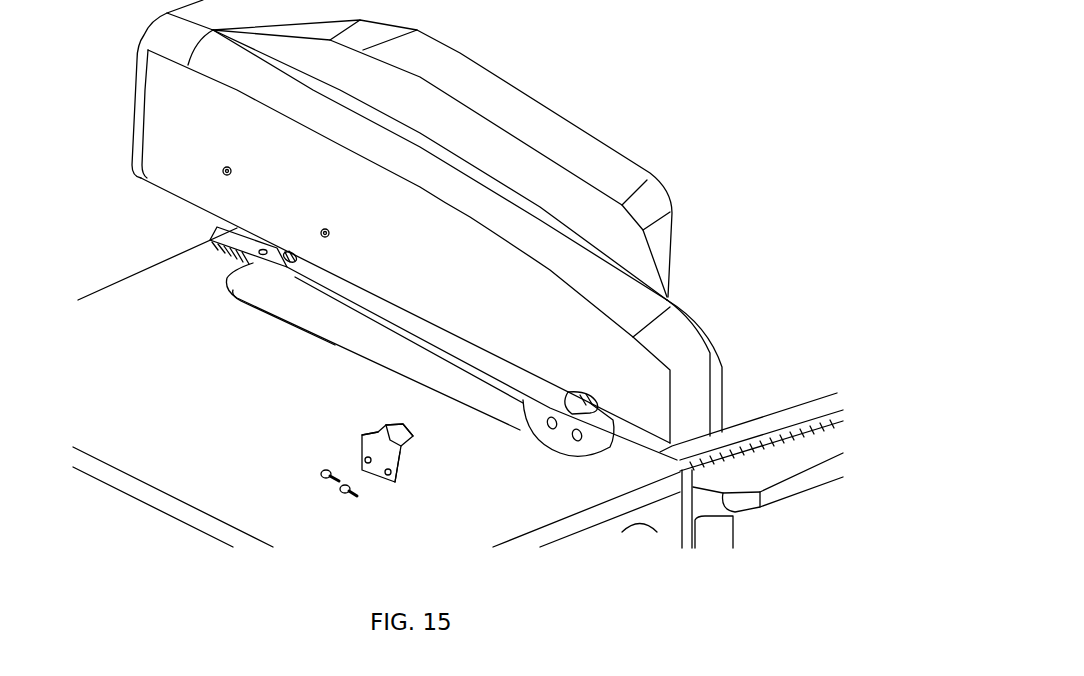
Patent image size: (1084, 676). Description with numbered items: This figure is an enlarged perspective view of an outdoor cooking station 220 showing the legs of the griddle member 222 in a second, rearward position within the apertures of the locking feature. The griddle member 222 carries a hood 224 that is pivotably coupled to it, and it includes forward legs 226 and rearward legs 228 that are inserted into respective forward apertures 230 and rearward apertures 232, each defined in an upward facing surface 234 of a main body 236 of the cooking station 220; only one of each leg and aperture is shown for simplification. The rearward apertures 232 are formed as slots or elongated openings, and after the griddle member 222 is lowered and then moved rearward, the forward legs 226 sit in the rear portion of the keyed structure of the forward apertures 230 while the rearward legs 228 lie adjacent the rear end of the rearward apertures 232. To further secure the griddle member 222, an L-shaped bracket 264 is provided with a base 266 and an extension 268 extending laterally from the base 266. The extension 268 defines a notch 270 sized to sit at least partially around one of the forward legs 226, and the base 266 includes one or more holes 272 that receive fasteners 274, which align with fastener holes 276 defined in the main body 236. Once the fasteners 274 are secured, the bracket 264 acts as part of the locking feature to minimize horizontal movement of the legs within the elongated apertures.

The outdoor cooking station 220 is at (823, 273).
The griddle member 222 is at (150, 191).
The hood 224 is at (153, 96).
The forward legs 226 is at (580, 388).
The rearward legs 228 is at (284, 253).
The forward apertures 230 is at (610, 465).
The rearward apertures 232 is at (312, 279).
The upward facing surface 234 is at (357, 298).
The main body 236 is at (213, 234).
The bracket 264 is at (352, 441).
The base 266 is at (360, 448).
The extension 268 is at (375, 430).
The notch 270 is at (395, 422).
The holes 272 is at (403, 484).
The fasteners 274 is at (340, 488).
The fastener holes 276 is at (547, 421).